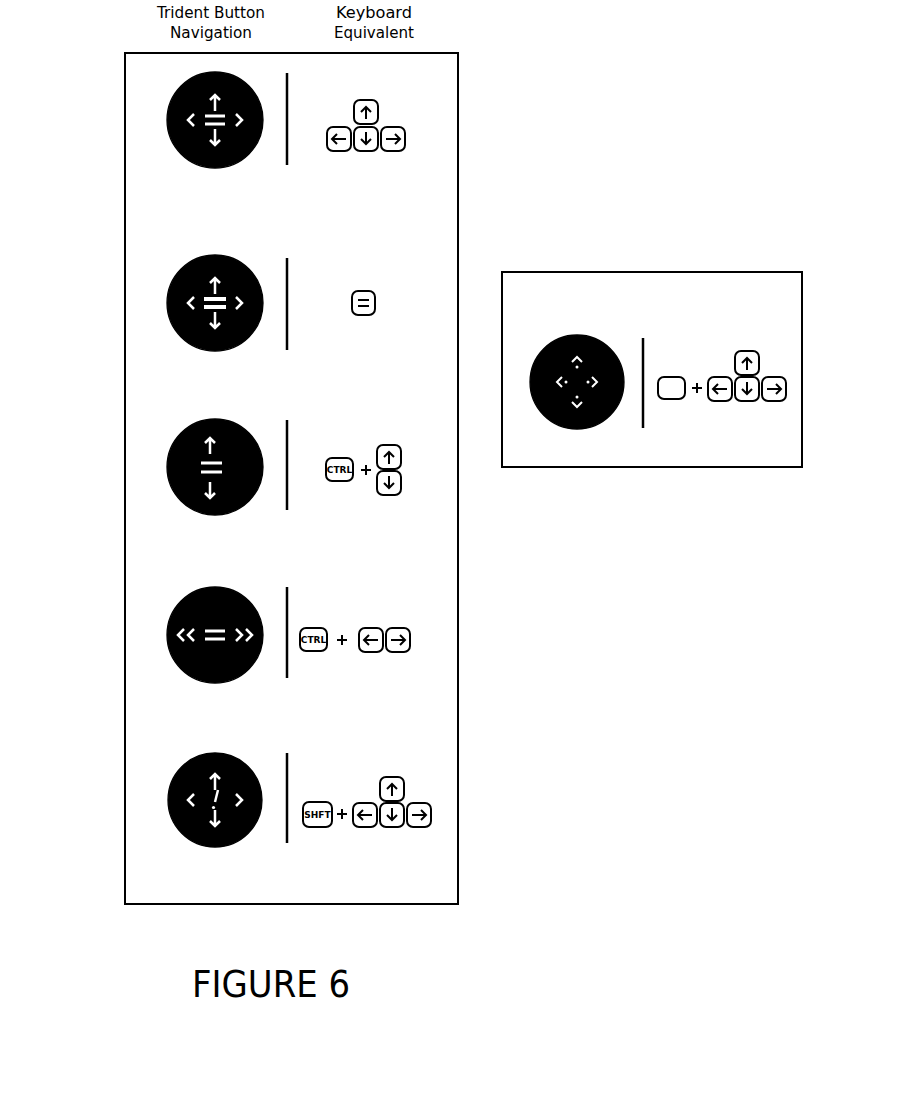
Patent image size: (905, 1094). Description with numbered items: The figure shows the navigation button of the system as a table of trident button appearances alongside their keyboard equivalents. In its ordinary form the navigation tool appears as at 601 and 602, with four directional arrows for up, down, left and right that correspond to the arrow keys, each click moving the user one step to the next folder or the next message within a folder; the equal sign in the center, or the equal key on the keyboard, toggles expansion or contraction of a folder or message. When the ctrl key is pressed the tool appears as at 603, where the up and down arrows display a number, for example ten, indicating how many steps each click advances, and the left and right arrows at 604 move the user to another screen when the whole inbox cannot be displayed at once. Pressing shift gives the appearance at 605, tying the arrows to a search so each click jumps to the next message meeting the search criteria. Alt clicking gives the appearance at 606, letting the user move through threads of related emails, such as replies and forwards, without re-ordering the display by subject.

The navigation tool 601 is at (147, 123).
The navigation tool 602 is at (147, 311).
The navigation tool in ctrl mode 603 is at (147, 478).
The left and right arrows in ctrl mode 604 is at (147, 639).
The navigation tool in shift mode 605 is at (147, 801).
The navigation tool in alt mode 606 is at (583, 303).